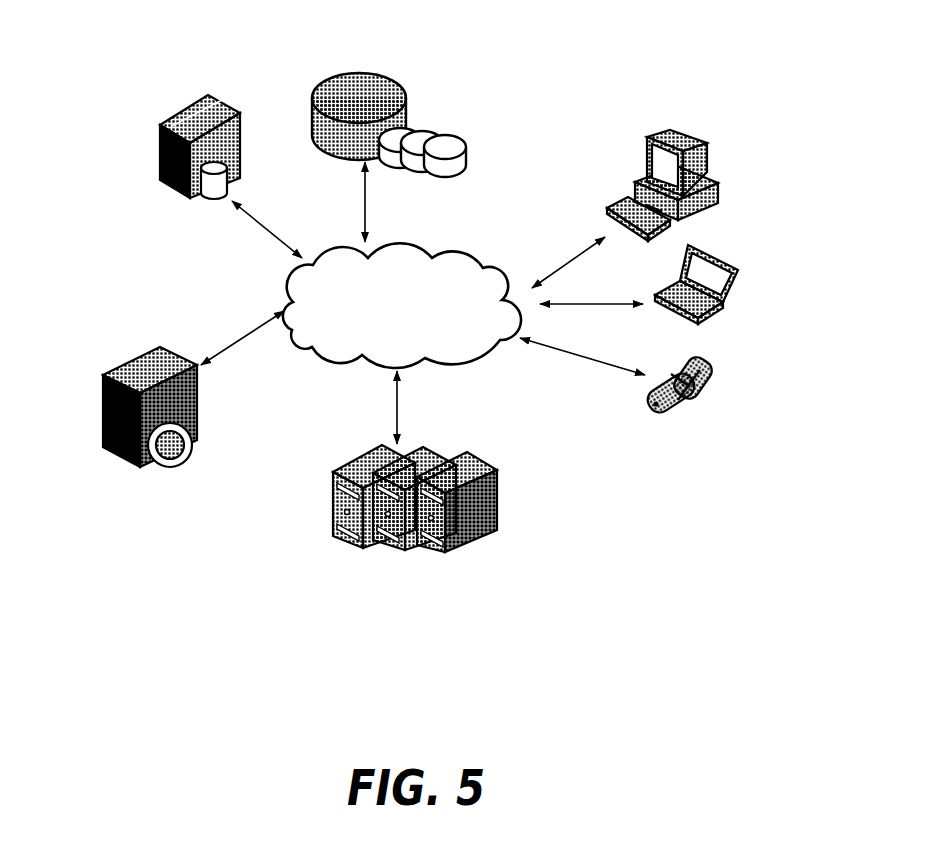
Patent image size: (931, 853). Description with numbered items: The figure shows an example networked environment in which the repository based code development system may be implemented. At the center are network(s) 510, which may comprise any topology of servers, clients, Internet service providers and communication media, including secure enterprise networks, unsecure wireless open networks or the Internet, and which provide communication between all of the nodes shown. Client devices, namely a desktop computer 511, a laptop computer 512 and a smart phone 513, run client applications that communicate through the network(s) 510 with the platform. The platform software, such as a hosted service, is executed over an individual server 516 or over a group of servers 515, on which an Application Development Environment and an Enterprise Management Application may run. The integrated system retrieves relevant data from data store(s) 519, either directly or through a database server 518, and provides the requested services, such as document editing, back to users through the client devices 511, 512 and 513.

The network(s) 510 is at (404, 236).
The desktop computer 511 is at (704, 126).
The laptop computer 512 is at (736, 247).
The smart phone 513 is at (706, 360).
The server computers 515 is at (358, 446).
The server 516 is at (130, 352).
The database server 518 is at (200, 206).
The data store(s) 519 is at (374, 51).